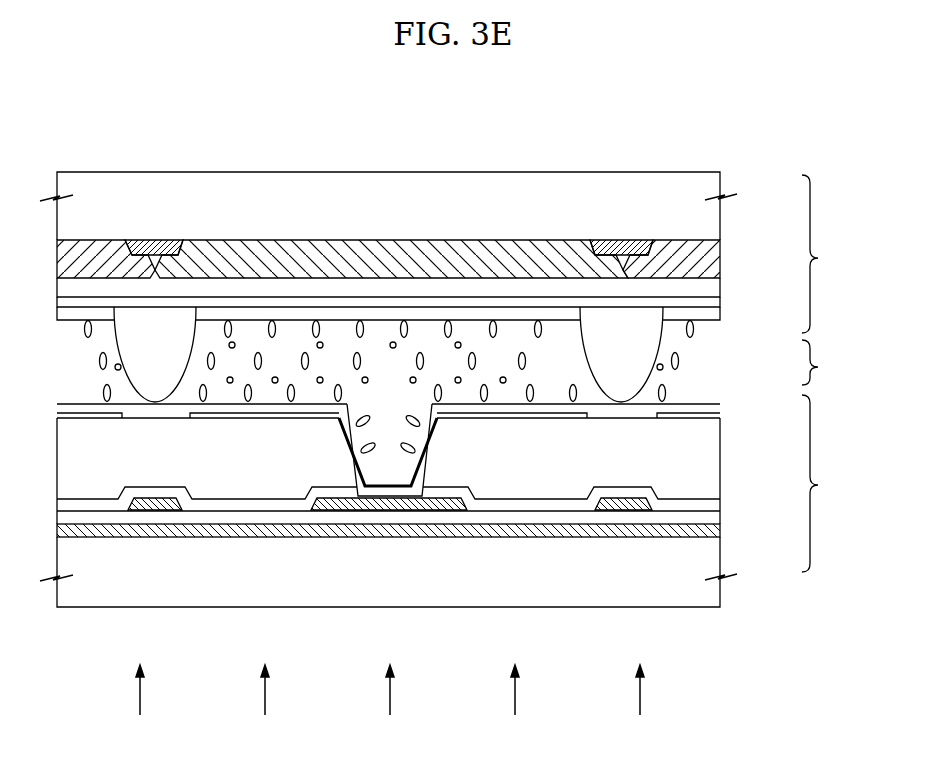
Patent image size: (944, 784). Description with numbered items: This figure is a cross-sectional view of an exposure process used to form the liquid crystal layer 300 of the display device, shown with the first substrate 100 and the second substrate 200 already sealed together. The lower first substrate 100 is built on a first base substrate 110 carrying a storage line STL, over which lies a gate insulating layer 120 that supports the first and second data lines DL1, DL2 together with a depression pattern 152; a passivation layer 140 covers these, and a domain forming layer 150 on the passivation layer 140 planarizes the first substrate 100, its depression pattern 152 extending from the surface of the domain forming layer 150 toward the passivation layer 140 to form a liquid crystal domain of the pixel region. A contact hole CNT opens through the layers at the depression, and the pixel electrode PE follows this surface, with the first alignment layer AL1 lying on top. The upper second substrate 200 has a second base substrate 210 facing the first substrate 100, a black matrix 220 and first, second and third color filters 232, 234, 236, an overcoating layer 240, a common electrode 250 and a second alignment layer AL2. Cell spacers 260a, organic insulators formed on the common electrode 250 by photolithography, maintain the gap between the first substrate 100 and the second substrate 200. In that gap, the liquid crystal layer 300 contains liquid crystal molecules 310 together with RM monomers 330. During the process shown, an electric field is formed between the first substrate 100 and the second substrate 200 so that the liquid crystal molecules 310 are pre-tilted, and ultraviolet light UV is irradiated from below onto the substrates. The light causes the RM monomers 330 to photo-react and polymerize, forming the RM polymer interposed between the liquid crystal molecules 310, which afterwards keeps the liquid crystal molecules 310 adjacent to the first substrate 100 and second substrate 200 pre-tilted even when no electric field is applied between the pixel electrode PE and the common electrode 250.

The first substrate 100 is at (834, 483).
The first base substrate 110 is at (712, 545).
The gate insulating layer 120 is at (712, 517).
The passivation layer 140 is at (712, 498).
The domain forming layer 150 is at (712, 454).
The depression pattern 152 is at (392, 476).
The second substrate 200 is at (834, 254).
The second base substrate 210 is at (712, 188).
The black matrix 220 is at (157, 252).
The first color filter 232 is at (397, 262).
The second color filter 234 is at (97, 245).
The third color filter 236 is at (683, 252).
The overcoating layer 240 is at (712, 289).
The common electrode 250 is at (712, 303).
The cell spacer 260a is at (132, 354).
The liquid crystal layer 300 is at (834, 362).
The liquid crystal molecules 310 is at (694, 334).
The RM monomers 330 is at (663, 369).
The first alignment layer AL1 is at (712, 407).
The second alignment layer AL2 is at (712, 318).
The first data line DL1 is at (153, 512).
The second data line DL2 is at (620, 512).
The contact hole CNT is at (330, 512).
The pixel electrode PE is at (517, 415).
The storage line STL is at (712, 531).
The ultraviolet light UV is at (390, 705).